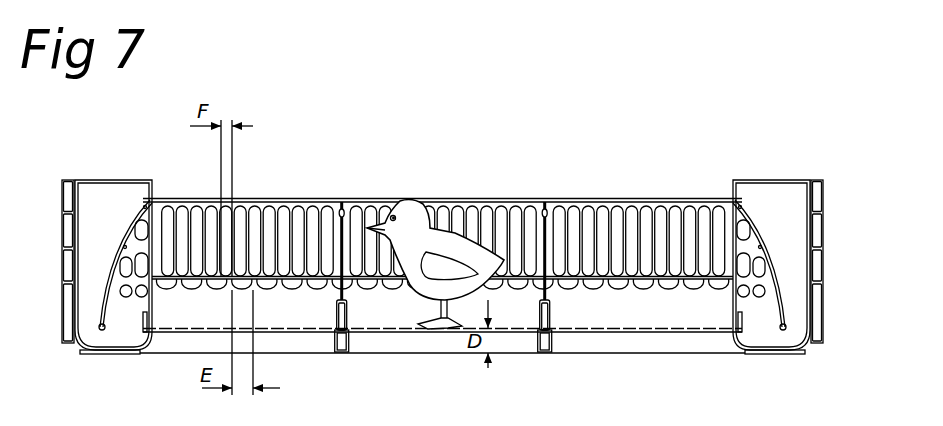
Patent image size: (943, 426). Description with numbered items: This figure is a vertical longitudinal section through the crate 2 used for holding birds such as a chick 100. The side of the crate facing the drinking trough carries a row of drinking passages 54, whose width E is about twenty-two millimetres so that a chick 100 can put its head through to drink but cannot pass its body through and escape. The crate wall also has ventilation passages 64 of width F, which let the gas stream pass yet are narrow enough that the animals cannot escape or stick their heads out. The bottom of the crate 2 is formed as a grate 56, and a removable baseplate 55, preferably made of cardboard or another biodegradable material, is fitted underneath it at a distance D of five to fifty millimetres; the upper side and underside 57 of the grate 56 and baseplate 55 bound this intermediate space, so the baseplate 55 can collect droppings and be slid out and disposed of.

The crate 2 is at (442, 247).
The ventilation passage 64 is at (272, 217).
The drinking passage 54 is at (290, 281).
The grate 56 is at (380, 333).
The upper side/underside of grate/baseplate 57 is at (508, 333).
The baseplate 55 is at (632, 354).
The chick 100 is at (424, 224).